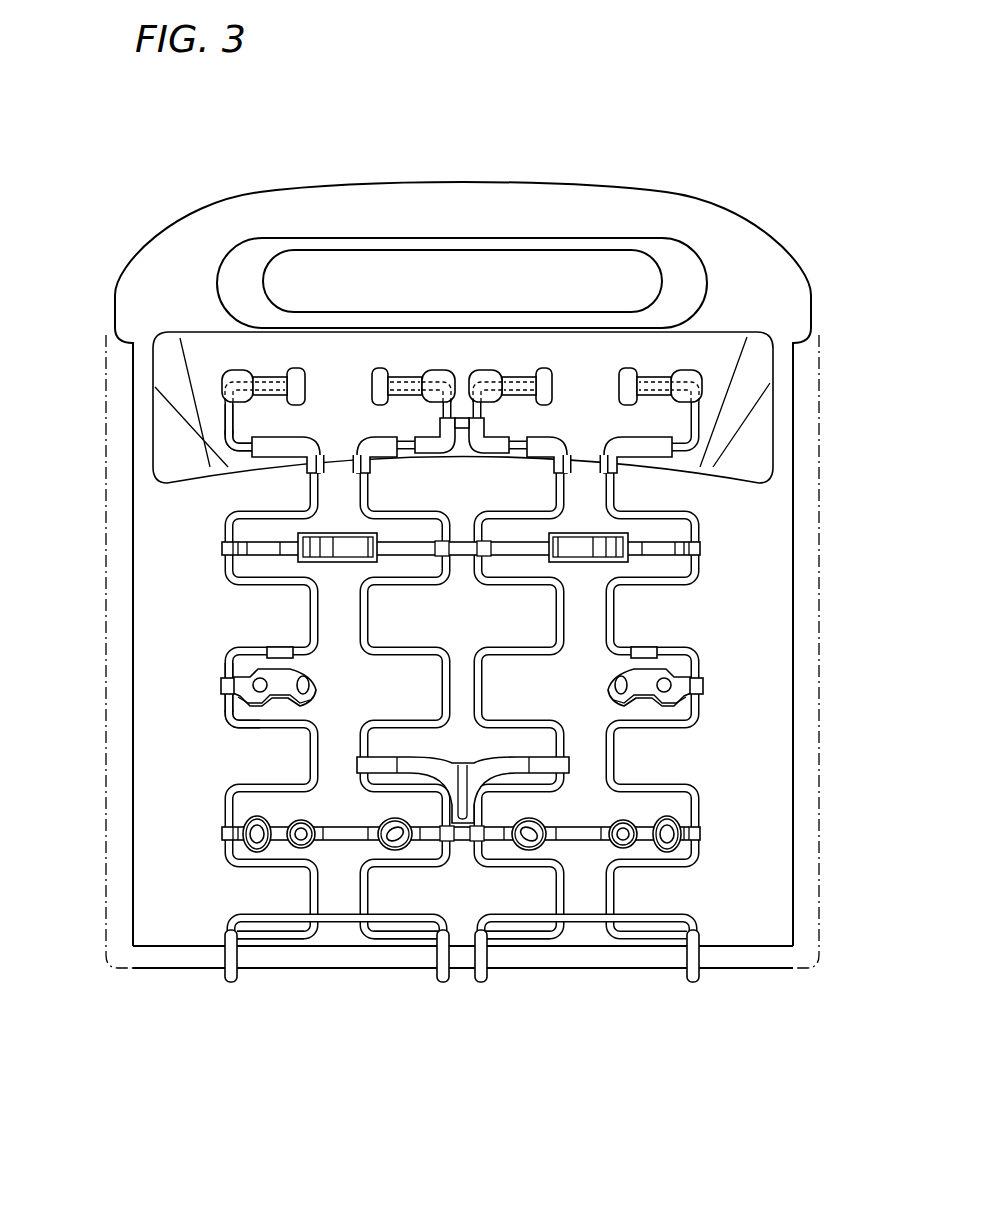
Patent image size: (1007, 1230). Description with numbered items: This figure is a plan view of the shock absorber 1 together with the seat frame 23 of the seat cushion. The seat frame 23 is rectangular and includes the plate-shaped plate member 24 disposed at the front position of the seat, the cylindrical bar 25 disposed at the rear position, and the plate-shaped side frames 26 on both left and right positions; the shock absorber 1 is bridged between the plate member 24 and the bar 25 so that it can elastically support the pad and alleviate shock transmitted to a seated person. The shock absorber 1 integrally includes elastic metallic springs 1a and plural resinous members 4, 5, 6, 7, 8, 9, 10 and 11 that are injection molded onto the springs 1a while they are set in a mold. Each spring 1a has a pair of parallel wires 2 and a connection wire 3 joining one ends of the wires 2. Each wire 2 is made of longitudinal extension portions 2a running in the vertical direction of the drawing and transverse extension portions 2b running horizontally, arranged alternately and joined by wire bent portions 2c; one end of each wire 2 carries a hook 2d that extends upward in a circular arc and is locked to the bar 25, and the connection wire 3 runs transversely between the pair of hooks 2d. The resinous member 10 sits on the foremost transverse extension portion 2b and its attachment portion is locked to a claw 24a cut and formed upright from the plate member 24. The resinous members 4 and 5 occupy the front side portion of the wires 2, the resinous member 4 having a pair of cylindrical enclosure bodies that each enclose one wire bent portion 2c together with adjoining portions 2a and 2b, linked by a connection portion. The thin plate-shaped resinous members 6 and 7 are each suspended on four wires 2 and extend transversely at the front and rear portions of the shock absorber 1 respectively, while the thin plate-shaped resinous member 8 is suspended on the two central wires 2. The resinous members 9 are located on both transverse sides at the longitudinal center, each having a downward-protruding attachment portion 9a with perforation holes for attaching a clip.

The shock absorber 1 is at (460, 695).
The spring 1a is at (339, 928).
The wire 2 is at (374, 727).
The longitudinal extension portion 2a is at (230, 410).
The transverse extension portion 2b is at (247, 446).
The wire bent portion 2c is at (230, 452).
The hook 2d is at (231, 984).
The connection wire 3 is at (500, 912).
The resinous member 4 is at (299, 440).
The resinous member 5 is at (494, 440).
The resinous member 6 is at (220, 548).
The resinous member 7 is at (220, 832).
The resinous member 8 is at (356, 778).
The resinous member 9 is at (459, 714).
The attachment portion 9a is at (624, 698).
The resinous member 10 is at (96, 333).
The resinous member 11 is at (235, 957).
The seat frame 23 is at (244, 192).
The plate member 24 is at (332, 212).
The claw 24a is at (268, 384).
The bar 25 is at (188, 962).
The side frame 26 is at (107, 762).